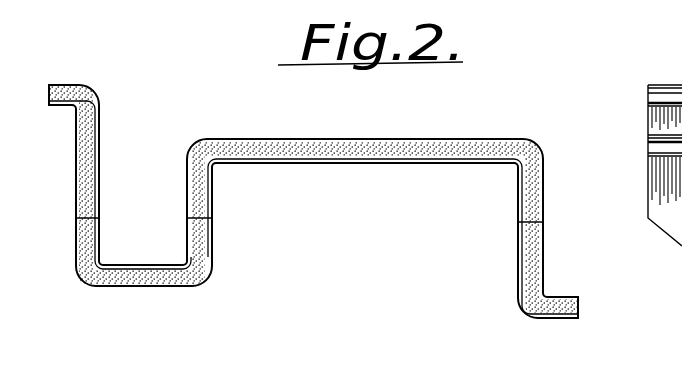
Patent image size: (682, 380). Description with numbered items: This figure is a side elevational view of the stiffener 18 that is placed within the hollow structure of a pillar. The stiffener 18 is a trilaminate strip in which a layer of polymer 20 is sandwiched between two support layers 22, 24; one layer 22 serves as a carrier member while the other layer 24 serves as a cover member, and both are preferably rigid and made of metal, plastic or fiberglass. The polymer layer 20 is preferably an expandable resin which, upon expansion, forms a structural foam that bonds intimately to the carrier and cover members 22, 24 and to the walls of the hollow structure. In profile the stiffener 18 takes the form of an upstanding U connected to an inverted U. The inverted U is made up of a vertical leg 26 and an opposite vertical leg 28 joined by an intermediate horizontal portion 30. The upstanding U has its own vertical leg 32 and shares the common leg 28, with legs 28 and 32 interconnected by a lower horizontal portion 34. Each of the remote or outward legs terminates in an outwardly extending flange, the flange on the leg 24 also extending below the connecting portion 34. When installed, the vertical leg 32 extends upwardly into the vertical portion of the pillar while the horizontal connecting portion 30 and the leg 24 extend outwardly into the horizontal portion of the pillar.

The stiffener 18 is at (494, 181).
The polymer layer 20 is at (582, 305).
The support layer (carrier member) 22 is at (550, 318).
The support layer (cover member) 24 is at (613, 227).
The vertical leg 26 is at (545, 187).
The vertical leg 28 is at (213, 218).
The intermediate horizontal portion 30 is at (523, 138).
The vertical leg 32 is at (98, 160).
The horizontal portion 34 is at (151, 289).